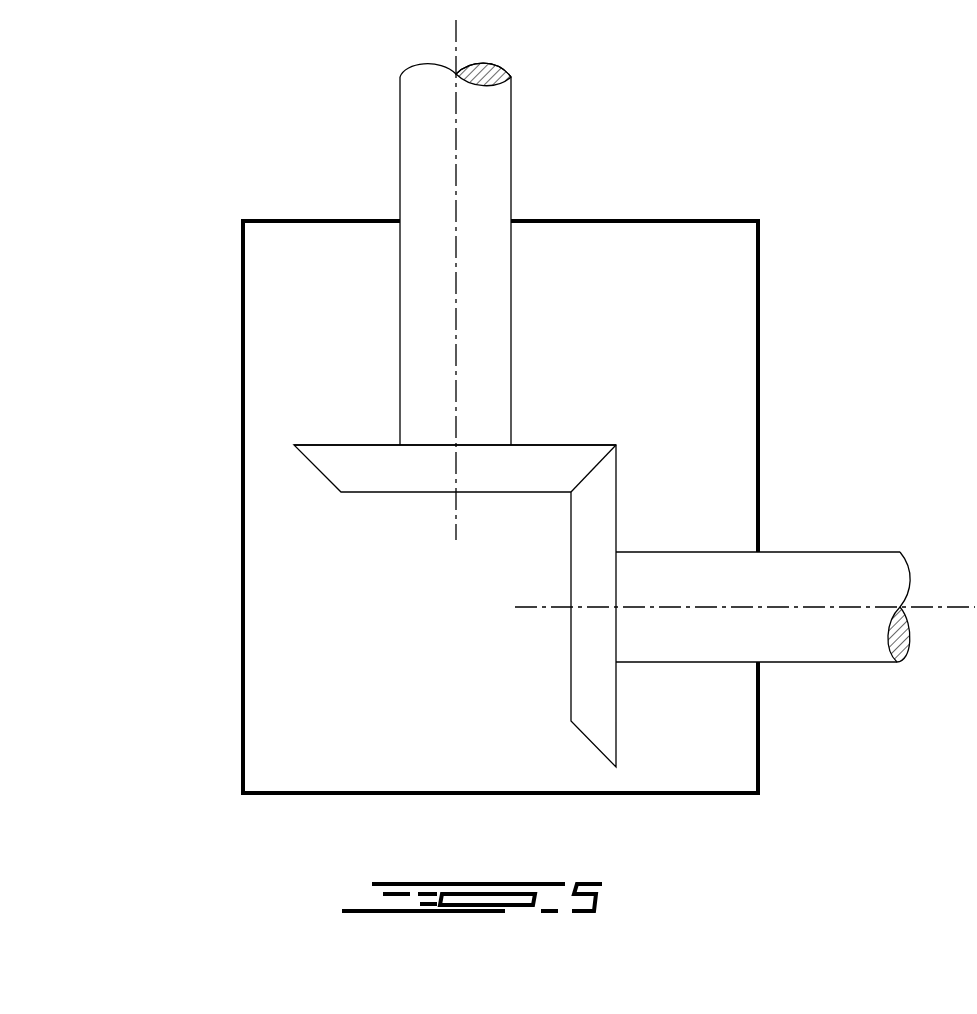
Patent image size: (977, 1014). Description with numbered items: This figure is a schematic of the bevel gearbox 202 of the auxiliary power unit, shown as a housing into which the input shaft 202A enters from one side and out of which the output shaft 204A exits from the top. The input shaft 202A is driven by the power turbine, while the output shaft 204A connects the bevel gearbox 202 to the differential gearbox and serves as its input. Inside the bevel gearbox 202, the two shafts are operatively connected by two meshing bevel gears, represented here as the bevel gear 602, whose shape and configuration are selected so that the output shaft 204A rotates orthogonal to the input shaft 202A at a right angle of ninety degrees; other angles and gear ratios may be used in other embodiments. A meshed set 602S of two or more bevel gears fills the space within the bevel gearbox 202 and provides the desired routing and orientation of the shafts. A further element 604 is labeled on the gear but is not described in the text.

The bevel gearbox 202 is at (243, 263).
The output shaft 204A is at (513, 164).
The input shaft 202A is at (843, 552).
The bevel gear 602 is at (617, 490).
The top surface of gate 604 is at (554, 445).
The meshed set of bevel gears 602S is at (397, 634).